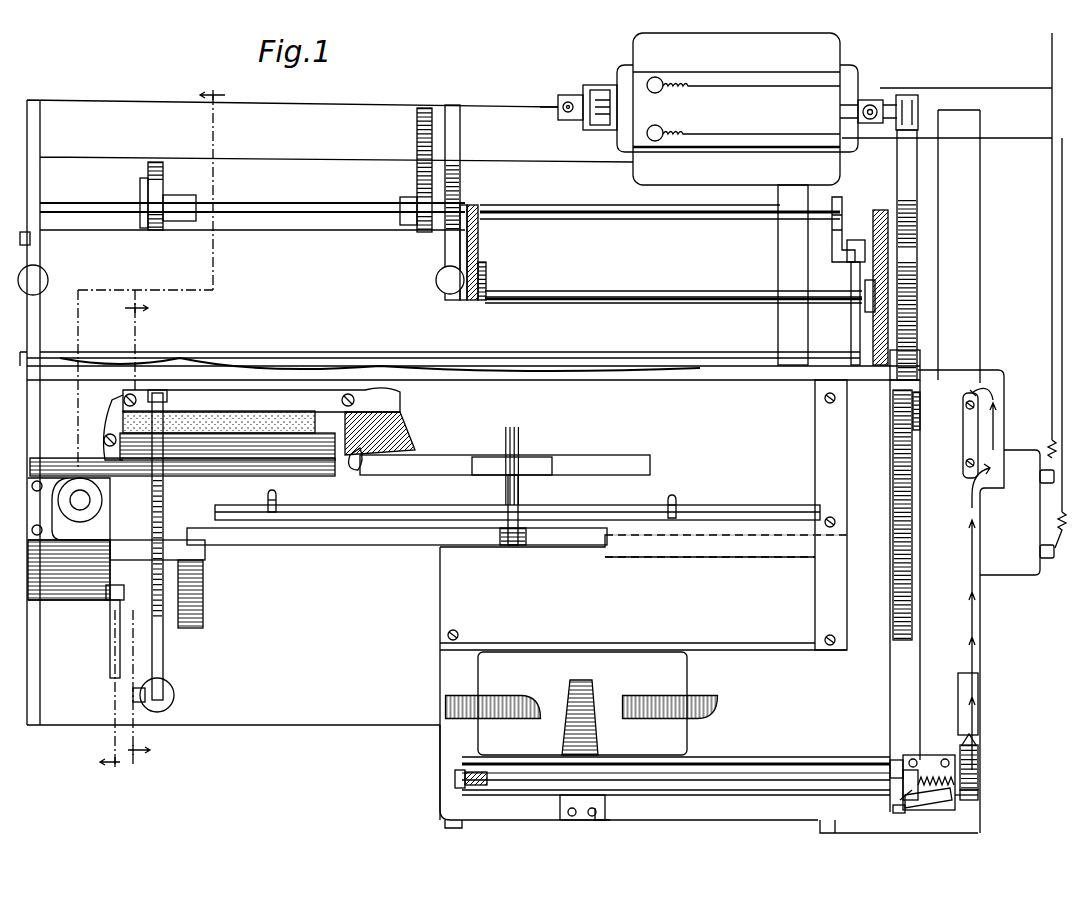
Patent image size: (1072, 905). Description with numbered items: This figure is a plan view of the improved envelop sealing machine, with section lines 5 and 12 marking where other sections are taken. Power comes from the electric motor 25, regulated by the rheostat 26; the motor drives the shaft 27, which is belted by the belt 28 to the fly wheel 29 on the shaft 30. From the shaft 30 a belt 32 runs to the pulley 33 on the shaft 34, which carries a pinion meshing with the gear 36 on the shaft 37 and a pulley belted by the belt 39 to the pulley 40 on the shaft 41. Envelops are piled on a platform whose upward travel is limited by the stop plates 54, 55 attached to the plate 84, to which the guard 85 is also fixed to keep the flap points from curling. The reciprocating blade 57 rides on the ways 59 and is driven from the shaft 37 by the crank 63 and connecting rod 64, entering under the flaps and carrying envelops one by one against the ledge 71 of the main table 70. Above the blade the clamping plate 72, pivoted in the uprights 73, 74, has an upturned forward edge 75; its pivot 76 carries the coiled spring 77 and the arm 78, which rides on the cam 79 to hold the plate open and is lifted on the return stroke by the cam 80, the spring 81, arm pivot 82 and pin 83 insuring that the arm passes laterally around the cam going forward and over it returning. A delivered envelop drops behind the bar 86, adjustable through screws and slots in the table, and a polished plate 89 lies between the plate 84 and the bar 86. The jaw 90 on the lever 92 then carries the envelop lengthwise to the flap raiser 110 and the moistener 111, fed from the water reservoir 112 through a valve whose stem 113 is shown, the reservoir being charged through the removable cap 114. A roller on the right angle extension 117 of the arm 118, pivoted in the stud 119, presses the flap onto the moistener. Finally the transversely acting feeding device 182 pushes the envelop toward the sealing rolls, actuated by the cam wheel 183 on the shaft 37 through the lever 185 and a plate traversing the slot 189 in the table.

The section line 5— 5 is at (145, 530).
The section line 12— 12 is at (160, 431).
The motor 25 is at (699, 109).
The rheostat 26 is at (1017, 512).
The shaft 27 is at (880, 100).
The belt 28 is at (905, 243).
The fly wheel 29 is at (918, 274).
The shaft 30 is at (920, 408).
The belt 32 is at (880, 210).
The pulley 33 is at (873, 268).
The shaft 34 is at (668, 303).
The gear 36 is at (417, 175).
The shaft 37 is at (645, 219).
The belt 39 is at (478, 263).
The pulley 40 is at (467, 240).
The shaft 41 is at (486, 283).
The plate 54 is at (505, 690).
The plate 55 is at (665, 678).
The reciprocating blade 57 is at (897, 760).
The ways 59 is at (922, 596).
The crank 63 is at (842, 240).
The connecting rod 64 is at (851, 343).
The main table 70 is at (783, 515).
The ledge 71 is at (764, 380).
The plate 72 is at (676, 788).
The upright 73 is at (455, 780).
The upright 74 is at (893, 805).
The forward edge 75 is at (745, 757).
The pivot 76 is at (912, 772).
The coiled spring 77 is at (940, 755).
The arm 78 is at (978, 754).
The cam 79 is at (978, 689).
The cam 80 is at (963, 450).
The spring 81 is at (935, 800).
The arm pivot 82 is at (978, 787).
The pin 83 is at (905, 803).
The plate 84 is at (450, 727).
The guard 85 is at (596, 707).
The bar 86 is at (746, 520).
The polished plate 89 is at (643, 677).
The clamping jaw 90 is at (545, 455).
The lever 92 is at (518, 495).
The flap raiser 110 is at (410, 430).
The moistener 111 is at (227, 440).
The water reservoir 112 is at (69, 539).
The valve stem 113 is at (103, 445).
The removable cap 114 is at (102, 499).
The right angle extension 117 is at (261, 410).
The arm 118 is at (163, 648).
The stud 119 is at (174, 697).
The transversely acting feeding device 182 is at (203, 581).
The cam wheel 183 is at (163, 176).
The lever 185 is at (140, 195).
The slot 189 is at (112, 648).